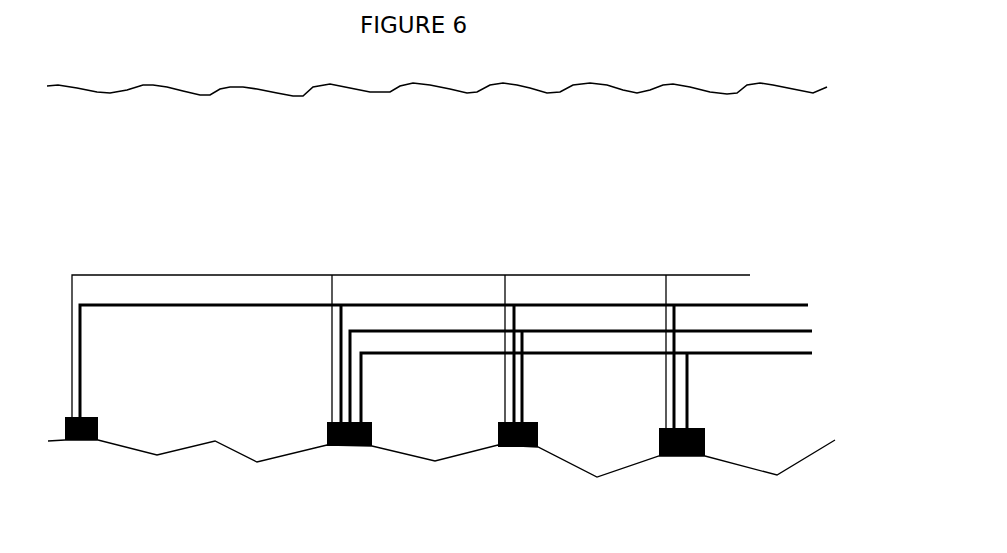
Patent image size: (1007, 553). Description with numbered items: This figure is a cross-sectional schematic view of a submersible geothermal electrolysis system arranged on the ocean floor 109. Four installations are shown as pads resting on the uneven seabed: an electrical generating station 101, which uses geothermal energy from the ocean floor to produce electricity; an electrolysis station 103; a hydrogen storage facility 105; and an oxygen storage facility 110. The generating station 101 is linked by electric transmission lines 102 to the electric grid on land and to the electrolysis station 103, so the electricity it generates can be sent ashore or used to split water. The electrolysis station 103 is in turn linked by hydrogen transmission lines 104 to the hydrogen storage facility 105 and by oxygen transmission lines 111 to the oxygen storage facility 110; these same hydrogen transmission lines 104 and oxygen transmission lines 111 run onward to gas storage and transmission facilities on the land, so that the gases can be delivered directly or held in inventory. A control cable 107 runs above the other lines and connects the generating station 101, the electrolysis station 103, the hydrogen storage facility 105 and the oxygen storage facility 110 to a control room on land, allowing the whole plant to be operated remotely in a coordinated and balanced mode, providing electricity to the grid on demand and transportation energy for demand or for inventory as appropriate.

The electrical generating station 101 is at (105, 471).
The electric transmission lines 102 is at (478, 363).
The electrolysis station 103 is at (375, 469).
The hydrogen transmission lines 104 is at (403, 328).
The hydrogen storage facility 105 is at (545, 474).
The control cable 107 is at (464, 339).
The ocean floor 109 is at (441, 436).
The oxygen storage facility 110 is at (670, 463).
The oxygen transmission lines 111 is at (393, 360).